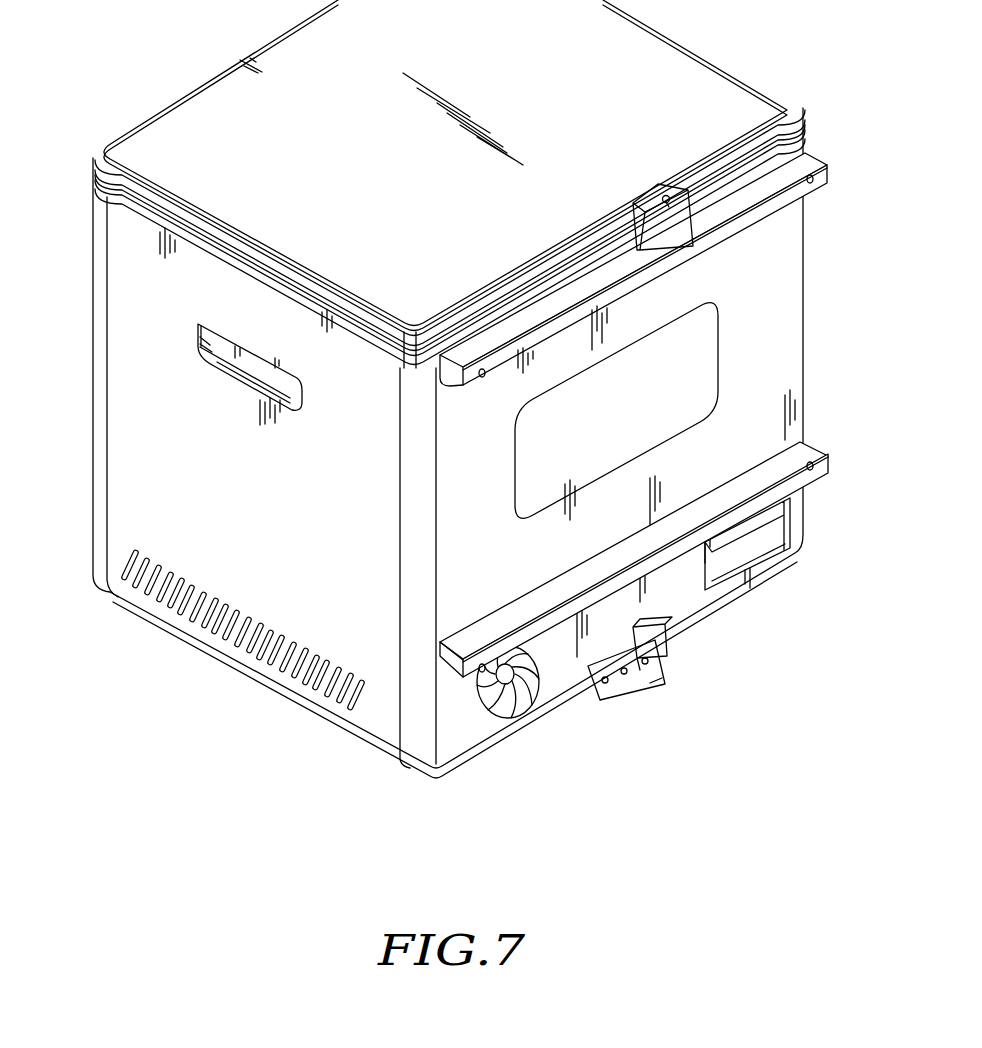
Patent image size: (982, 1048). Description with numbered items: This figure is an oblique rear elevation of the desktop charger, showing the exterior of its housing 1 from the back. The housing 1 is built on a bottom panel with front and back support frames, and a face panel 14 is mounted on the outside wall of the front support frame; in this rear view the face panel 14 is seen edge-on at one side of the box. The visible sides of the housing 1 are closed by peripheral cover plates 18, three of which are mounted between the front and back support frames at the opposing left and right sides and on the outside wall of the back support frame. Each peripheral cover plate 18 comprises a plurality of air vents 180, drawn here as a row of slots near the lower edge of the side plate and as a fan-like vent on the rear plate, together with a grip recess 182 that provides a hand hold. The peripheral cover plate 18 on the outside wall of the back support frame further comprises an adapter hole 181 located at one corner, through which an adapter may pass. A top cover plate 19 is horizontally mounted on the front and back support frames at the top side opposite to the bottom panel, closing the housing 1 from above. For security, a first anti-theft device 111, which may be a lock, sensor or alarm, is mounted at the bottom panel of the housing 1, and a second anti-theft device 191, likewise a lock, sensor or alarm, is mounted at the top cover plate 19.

The housing 1 is at (140, 38).
The face panel 14 is at (100, 258).
The peripheral cover plate 18 is at (785, 296).
The top cover plate 19 is at (775, 113).
The first anti-theft device 111 is at (655, 645).
The air vents 180 is at (130, 567).
The adapter hole 181 is at (757, 562).
The grip recess 182 is at (225, 355).
The second anti-theft device 191 is at (665, 216).